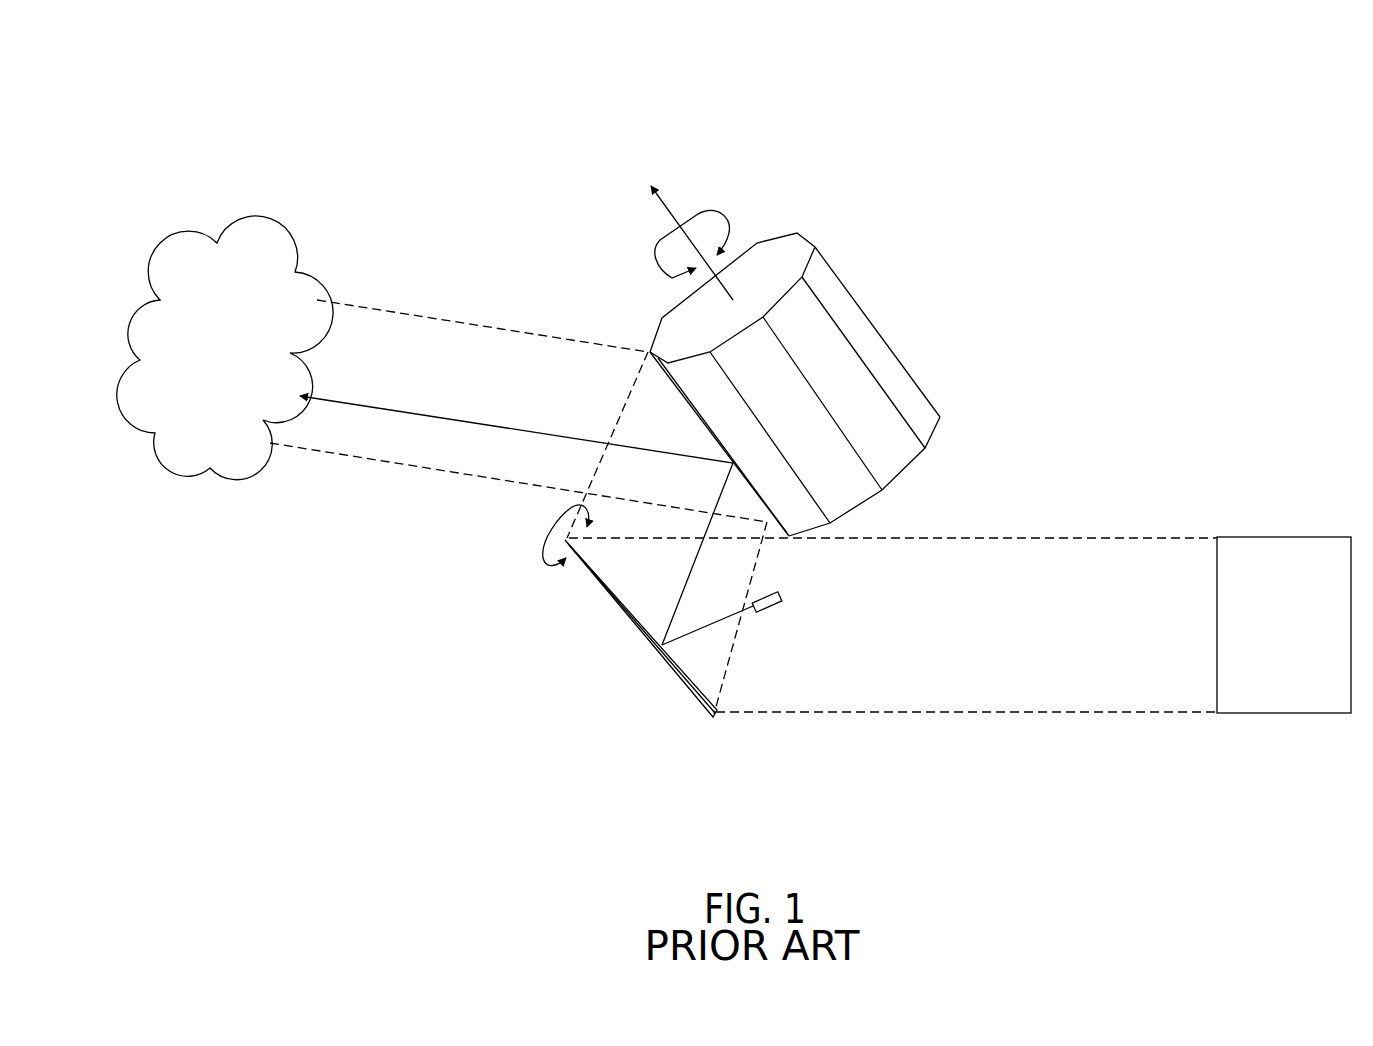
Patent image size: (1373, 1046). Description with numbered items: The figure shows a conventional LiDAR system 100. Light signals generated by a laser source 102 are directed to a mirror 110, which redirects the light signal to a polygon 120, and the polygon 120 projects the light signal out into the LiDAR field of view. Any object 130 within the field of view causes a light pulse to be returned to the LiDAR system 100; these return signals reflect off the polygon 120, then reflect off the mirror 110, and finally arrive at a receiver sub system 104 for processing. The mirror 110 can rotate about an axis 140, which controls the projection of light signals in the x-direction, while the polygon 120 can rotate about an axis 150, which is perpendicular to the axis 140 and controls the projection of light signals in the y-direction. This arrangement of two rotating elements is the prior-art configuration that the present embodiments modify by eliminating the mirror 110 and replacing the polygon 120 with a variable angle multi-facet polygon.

The LiDAR system 100 is at (178, 95).
The object 130 is at (258, 222).
The axis 150 is at (665, 207).
The polygon 120 is at (877, 318).
The receiver sub system 104 is at (1283, 537).
The axis 140 is at (545, 540).
The laser source 102 is at (782, 597).
The mirror 110 is at (674, 691).